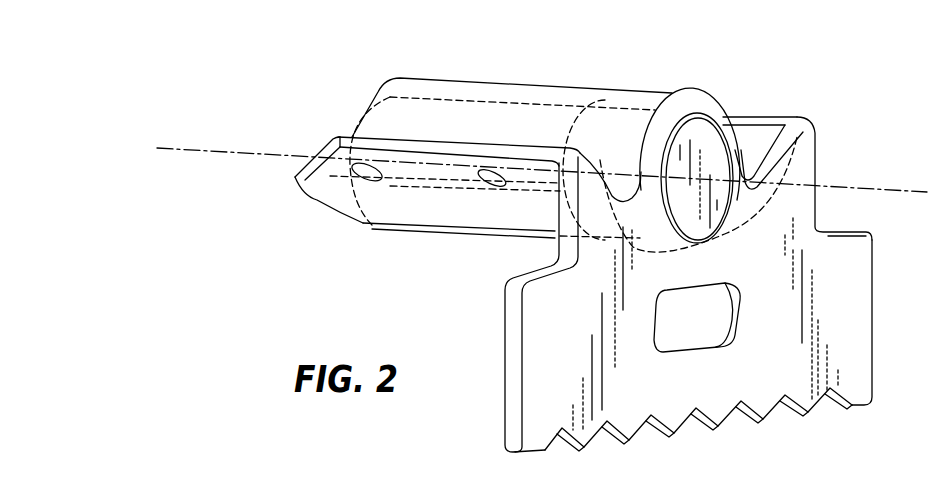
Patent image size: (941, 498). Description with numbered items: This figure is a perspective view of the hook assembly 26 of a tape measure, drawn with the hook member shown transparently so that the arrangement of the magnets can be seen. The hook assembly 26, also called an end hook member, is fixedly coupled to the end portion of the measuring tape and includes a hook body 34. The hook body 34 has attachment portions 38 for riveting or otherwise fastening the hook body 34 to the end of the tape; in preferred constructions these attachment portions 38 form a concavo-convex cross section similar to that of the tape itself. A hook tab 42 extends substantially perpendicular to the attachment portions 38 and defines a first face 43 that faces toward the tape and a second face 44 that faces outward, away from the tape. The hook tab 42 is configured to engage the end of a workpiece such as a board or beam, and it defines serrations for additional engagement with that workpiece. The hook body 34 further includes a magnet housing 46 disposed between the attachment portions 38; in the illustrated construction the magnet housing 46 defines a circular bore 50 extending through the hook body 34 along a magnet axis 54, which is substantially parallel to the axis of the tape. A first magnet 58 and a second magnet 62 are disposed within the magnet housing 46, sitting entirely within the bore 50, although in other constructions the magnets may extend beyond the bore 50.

The hook assembly 26 is at (629, 64).
The hook body 34 is at (803, 150).
The attachment portions 38 is at (738, 113).
The hook tab 42 is at (873, 313).
The first face 43 is at (503, 335).
The second face 44 is at (615, 405).
The magnet housing 46 is at (555, 83).
The circular bore 50 is at (733, 143).
The magnet axis 54 is at (218, 150).
The first magnet 58 is at (713, 110).
The second magnet 62 is at (440, 93).